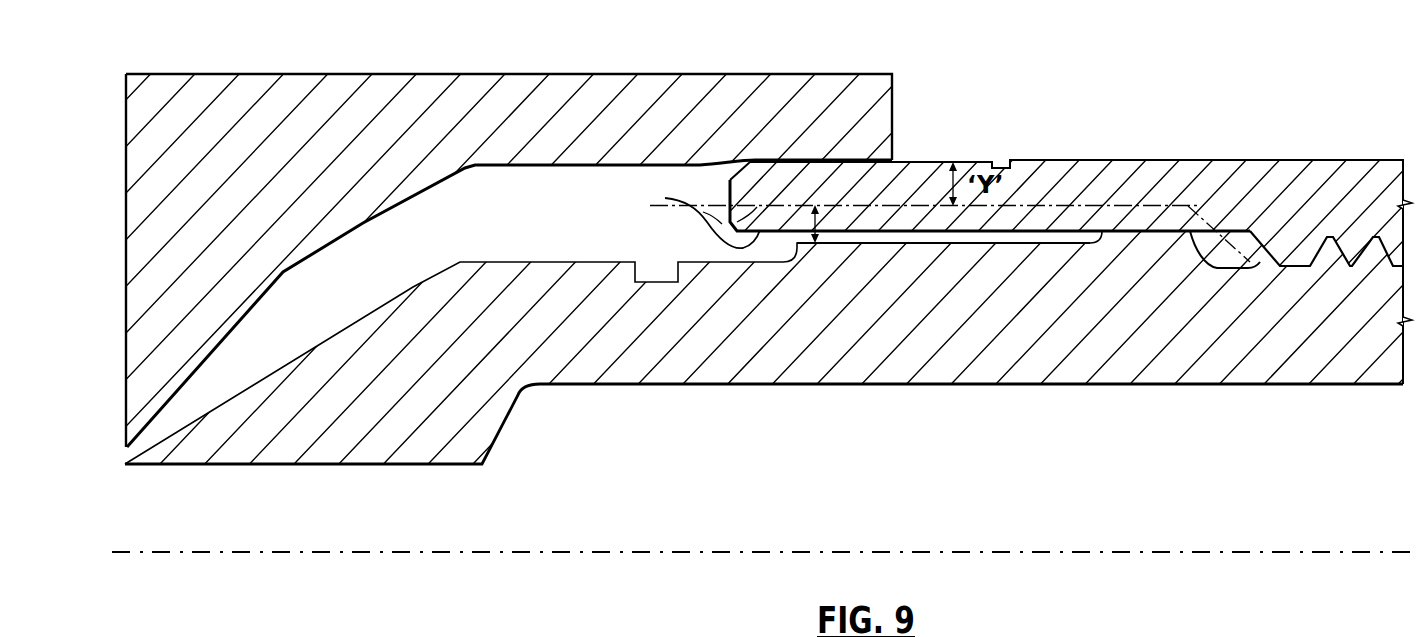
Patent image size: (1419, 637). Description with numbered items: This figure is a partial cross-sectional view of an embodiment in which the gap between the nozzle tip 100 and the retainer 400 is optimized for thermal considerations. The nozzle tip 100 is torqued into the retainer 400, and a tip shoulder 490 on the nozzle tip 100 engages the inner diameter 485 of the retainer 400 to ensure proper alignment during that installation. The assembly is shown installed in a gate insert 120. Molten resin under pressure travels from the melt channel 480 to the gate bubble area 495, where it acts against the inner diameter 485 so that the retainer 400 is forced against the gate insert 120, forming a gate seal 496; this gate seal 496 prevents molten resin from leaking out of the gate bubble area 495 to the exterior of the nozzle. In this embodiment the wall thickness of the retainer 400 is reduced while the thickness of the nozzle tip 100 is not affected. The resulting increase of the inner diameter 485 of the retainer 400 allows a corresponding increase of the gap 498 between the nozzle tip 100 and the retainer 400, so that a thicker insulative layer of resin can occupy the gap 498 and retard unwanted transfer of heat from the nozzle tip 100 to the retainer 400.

The nozzle tip 100 is at (330, 442).
The gate insert 120 is at (388, 93).
The retainer 400 is at (1270, 180).
The melt channel 480 is at (1002, 452).
The inner diameter 485 is at (665, 198).
The tip shoulder 490 is at (1140, 208).
The gate bubble area 495 is at (403, 274).
The gate seal 496 is at (786, 144).
The gap 'Z' 498 is at (816, 211).